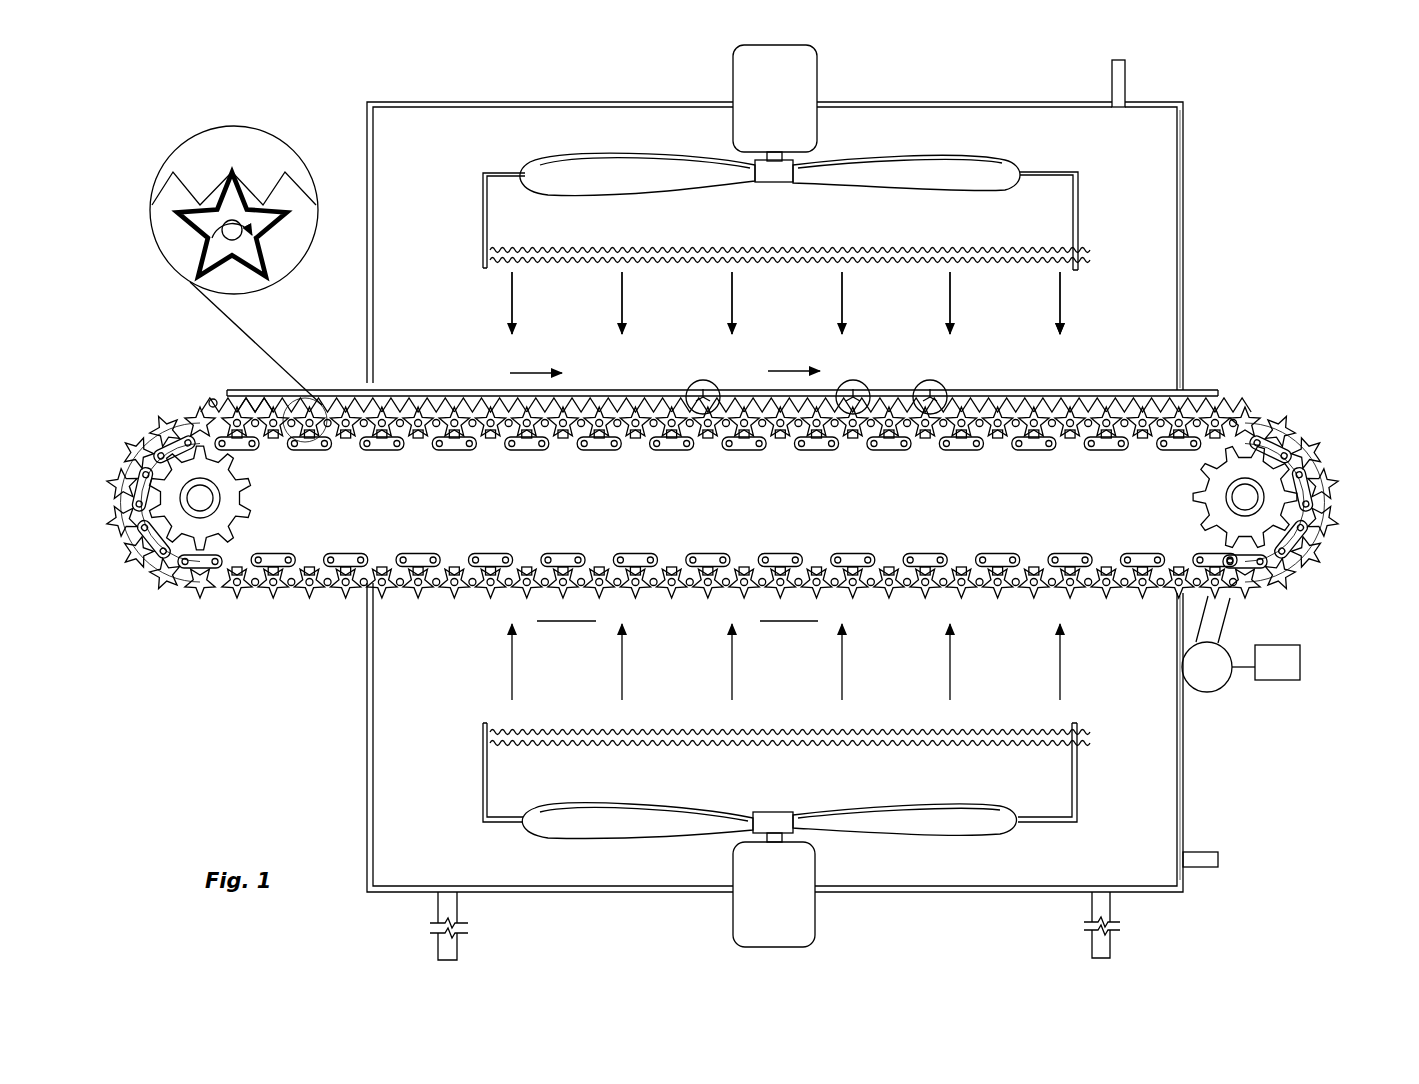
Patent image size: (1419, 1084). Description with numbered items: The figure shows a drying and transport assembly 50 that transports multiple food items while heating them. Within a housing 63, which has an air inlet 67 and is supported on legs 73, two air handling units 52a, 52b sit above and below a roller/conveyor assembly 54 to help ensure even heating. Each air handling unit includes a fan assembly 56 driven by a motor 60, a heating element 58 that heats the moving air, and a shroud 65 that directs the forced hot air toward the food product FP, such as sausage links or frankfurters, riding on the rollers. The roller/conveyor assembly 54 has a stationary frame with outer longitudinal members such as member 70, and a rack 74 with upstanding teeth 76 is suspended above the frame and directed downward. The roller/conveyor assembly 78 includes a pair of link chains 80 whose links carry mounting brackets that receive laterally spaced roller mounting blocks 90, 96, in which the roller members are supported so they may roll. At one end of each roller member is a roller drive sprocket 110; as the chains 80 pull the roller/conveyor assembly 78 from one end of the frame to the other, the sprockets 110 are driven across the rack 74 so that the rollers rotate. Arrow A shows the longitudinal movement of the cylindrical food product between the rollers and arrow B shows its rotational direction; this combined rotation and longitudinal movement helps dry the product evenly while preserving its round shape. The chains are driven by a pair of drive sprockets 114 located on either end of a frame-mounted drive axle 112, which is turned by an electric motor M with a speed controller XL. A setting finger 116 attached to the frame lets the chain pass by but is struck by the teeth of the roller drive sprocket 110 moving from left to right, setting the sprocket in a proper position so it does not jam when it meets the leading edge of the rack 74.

The drying and transport assembly 50 is at (1206, 146).
The air handling unit 52a is at (805, 226).
The air handling unit 52b is at (808, 755).
The roller/conveyor assembly 54 is at (1262, 397).
The fan assembly 56 is at (942, 158).
The heating element 58 is at (873, 250).
The motor 60 is at (788, 108).
The housing 63 is at (1184, 282).
The shroud 65 is at (1080, 786).
The air inlet 67 is at (1127, 78).
The outer longitudinal member 70 is at (982, 388).
The legs 73 is at (437, 915).
The rack 74 is at (262, 150).
The teeth 76 is at (722, 379).
The roller/conveyor assembly 78 is at (723, 467).
The link chain 80 is at (852, 555).
The roller mounting block 90 is at (722, 379).
The roller mounting block 96 is at (398, 397).
The roller drive sprocket 110 is at (257, 262).
The drive axle 112 is at (1246, 496).
The drive sprockets 114 is at (228, 513).
The setting finger 116 is at (210, 390).
The arrow A is at (562, 368).
The arrow B is at (207, 161).
The food product FP is at (694, 381).
The motor M is at (1207, 644).
The speed controller XL is at (1266, 662).